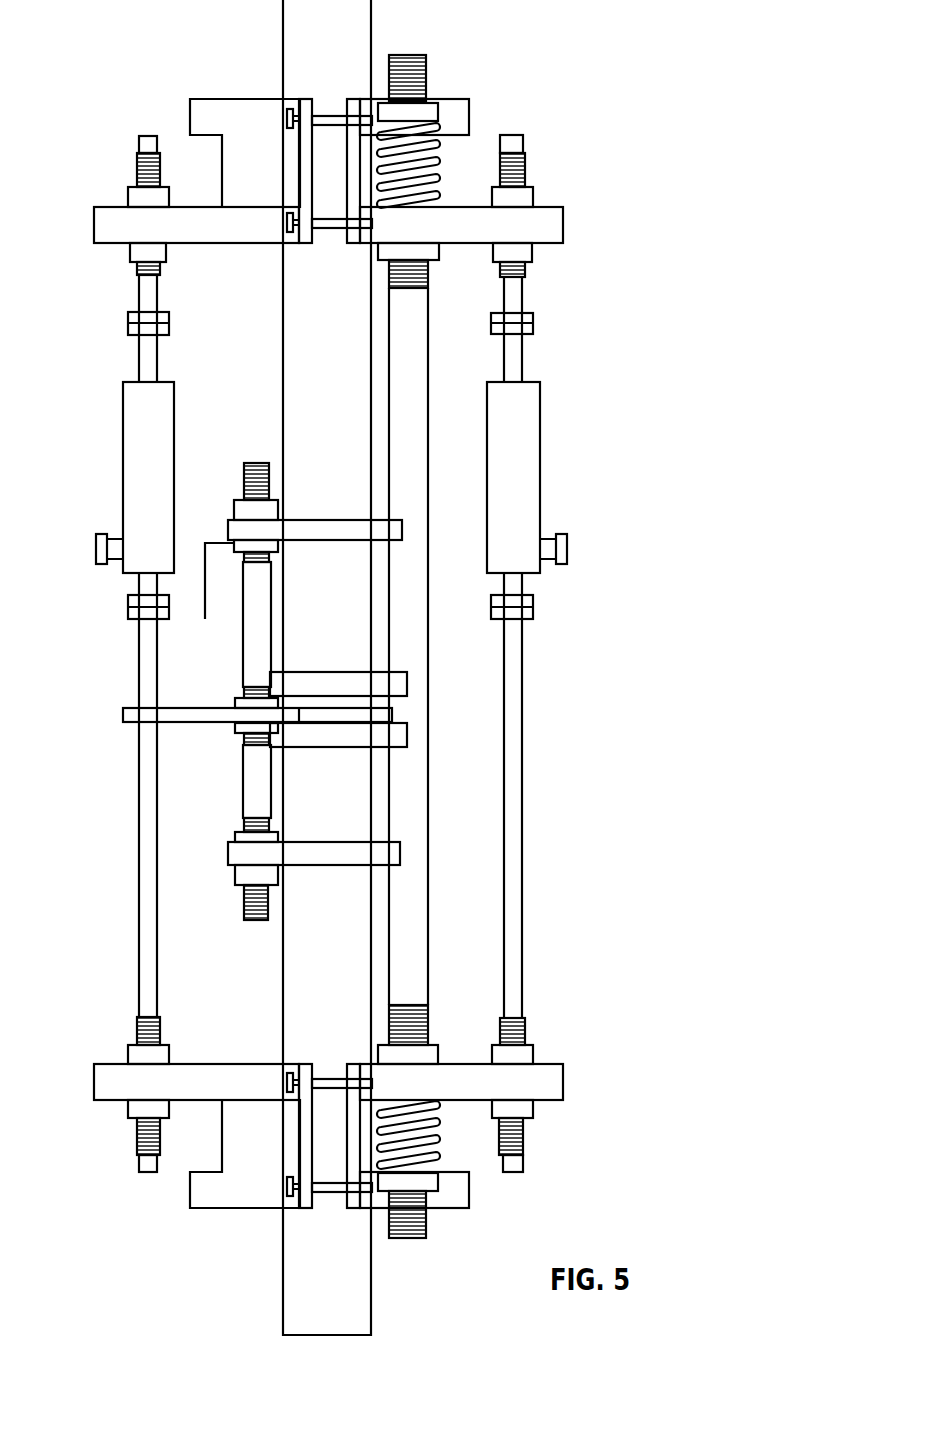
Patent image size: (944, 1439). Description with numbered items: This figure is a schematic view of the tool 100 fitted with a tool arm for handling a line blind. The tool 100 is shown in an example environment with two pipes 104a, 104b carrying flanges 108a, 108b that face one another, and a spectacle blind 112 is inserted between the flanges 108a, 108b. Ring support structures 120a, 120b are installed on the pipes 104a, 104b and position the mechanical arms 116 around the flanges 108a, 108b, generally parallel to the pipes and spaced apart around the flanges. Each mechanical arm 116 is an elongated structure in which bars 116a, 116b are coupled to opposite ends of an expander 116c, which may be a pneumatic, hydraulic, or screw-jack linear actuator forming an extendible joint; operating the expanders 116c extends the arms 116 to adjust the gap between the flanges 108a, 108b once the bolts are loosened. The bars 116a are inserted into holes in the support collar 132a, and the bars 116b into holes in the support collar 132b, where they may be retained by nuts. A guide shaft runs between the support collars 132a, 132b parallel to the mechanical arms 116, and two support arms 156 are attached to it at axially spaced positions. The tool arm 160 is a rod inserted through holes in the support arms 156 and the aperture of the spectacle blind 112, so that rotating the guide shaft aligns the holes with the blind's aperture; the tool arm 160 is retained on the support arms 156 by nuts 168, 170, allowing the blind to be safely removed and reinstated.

The tool 100 is at (216, 86).
The pipe 104a is at (373, 30).
The pipe 104b is at (372, 1283).
The flange 108a is at (383, 685).
The flange 108b is at (383, 731).
The spectacle blind 112 is at (388, 716).
The mechanical arm 116 is at (329, 653).
The bar 116a is at (138, 292).
The bar 116b is at (138, 968).
The expander 116c is at (122, 458).
The ring support structure 120a is at (195, 115).
The ring support structure 120b is at (195, 1192).
The support collar 132a is at (563, 223).
The support collar 132b is at (563, 1082).
The support arm 156 is at (237, 528).
The tool arm 160 is at (243, 670).
The nut 168 is at (235, 510).
The nut 170 is at (205, 617).